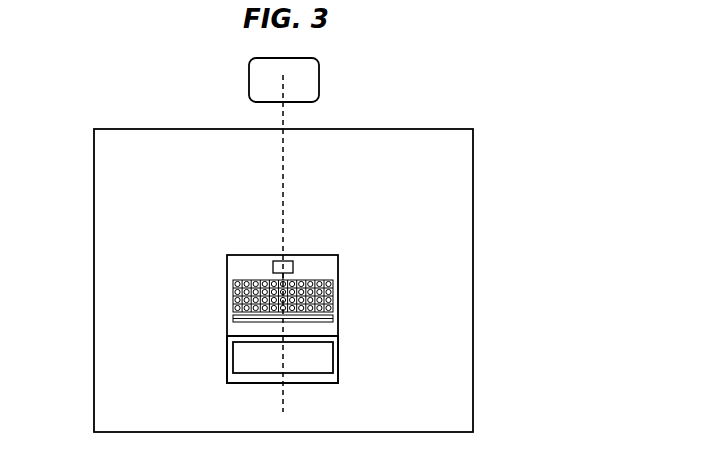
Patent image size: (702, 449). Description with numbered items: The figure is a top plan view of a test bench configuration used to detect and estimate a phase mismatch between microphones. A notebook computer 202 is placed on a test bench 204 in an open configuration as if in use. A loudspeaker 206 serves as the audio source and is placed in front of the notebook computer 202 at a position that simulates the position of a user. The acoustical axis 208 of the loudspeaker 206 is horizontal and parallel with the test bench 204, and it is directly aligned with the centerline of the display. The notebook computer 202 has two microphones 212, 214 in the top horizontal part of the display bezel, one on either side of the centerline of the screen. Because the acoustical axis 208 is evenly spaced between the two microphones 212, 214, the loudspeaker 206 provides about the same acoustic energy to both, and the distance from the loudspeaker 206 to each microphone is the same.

The notebook computer 202 is at (339, 282).
The test bench 204 is at (407, 128).
The loudspeaker 206 is at (249, 80).
The acoustical axis 208 is at (285, 178).
The microphone 212 is at (268, 375).
The microphone 214 is at (296, 376).